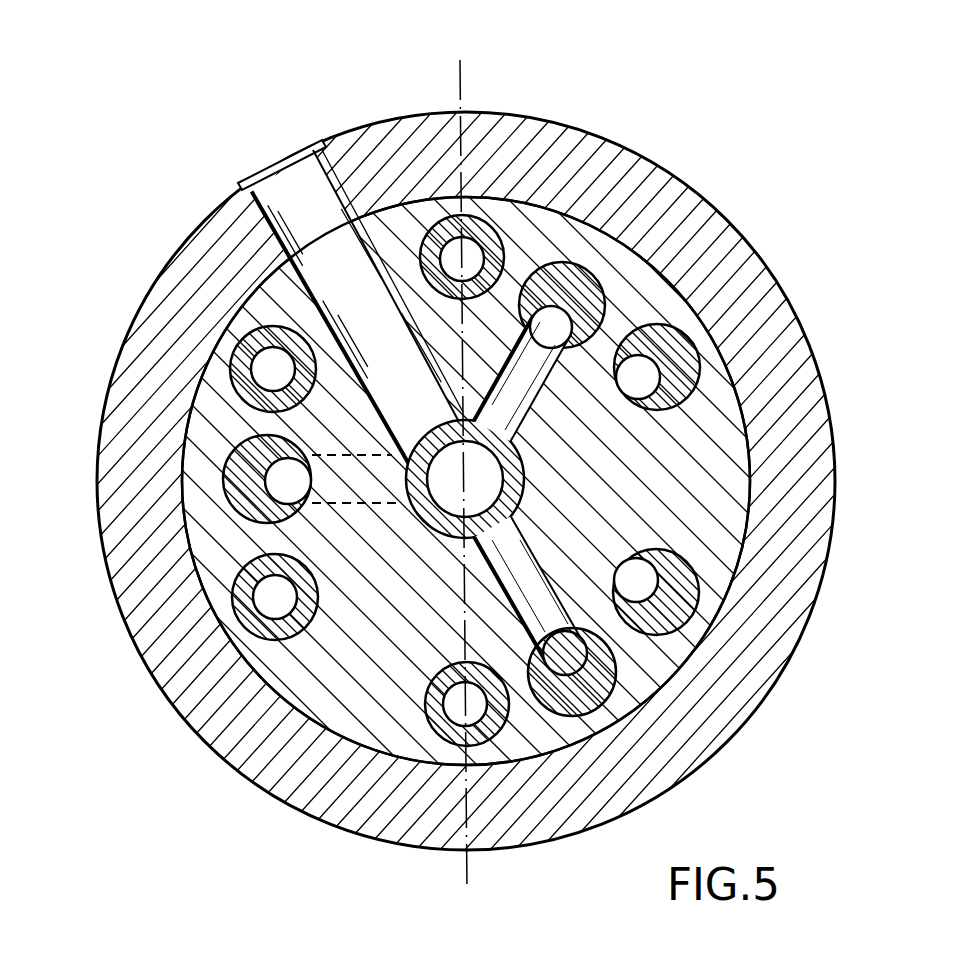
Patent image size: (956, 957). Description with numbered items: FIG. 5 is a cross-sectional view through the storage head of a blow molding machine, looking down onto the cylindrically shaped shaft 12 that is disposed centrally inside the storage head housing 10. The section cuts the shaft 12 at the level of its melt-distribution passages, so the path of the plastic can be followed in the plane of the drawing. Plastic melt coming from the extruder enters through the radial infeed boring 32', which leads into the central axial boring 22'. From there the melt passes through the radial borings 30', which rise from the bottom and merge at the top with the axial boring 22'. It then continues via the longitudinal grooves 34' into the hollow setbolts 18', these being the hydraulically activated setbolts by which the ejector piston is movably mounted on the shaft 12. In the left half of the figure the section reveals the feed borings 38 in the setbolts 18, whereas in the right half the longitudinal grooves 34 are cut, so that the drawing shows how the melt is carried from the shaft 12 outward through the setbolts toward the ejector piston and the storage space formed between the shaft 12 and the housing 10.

The storage head housing 10 is at (737, 268).
The shaft 12 is at (609, 454).
The setbolt 18 is at (239, 287).
The hollow setbolt 18' is at (438, 582).
The axial boring 22' is at (444, 517).
The radial borings 30' is at (530, 717).
The radial infeed boring 32' is at (350, 251).
The longitudinal grooves 34' is at (628, 296).
The longitudinal grooves 34 is at (743, 592).
The feed borings 38 is at (273, 607).